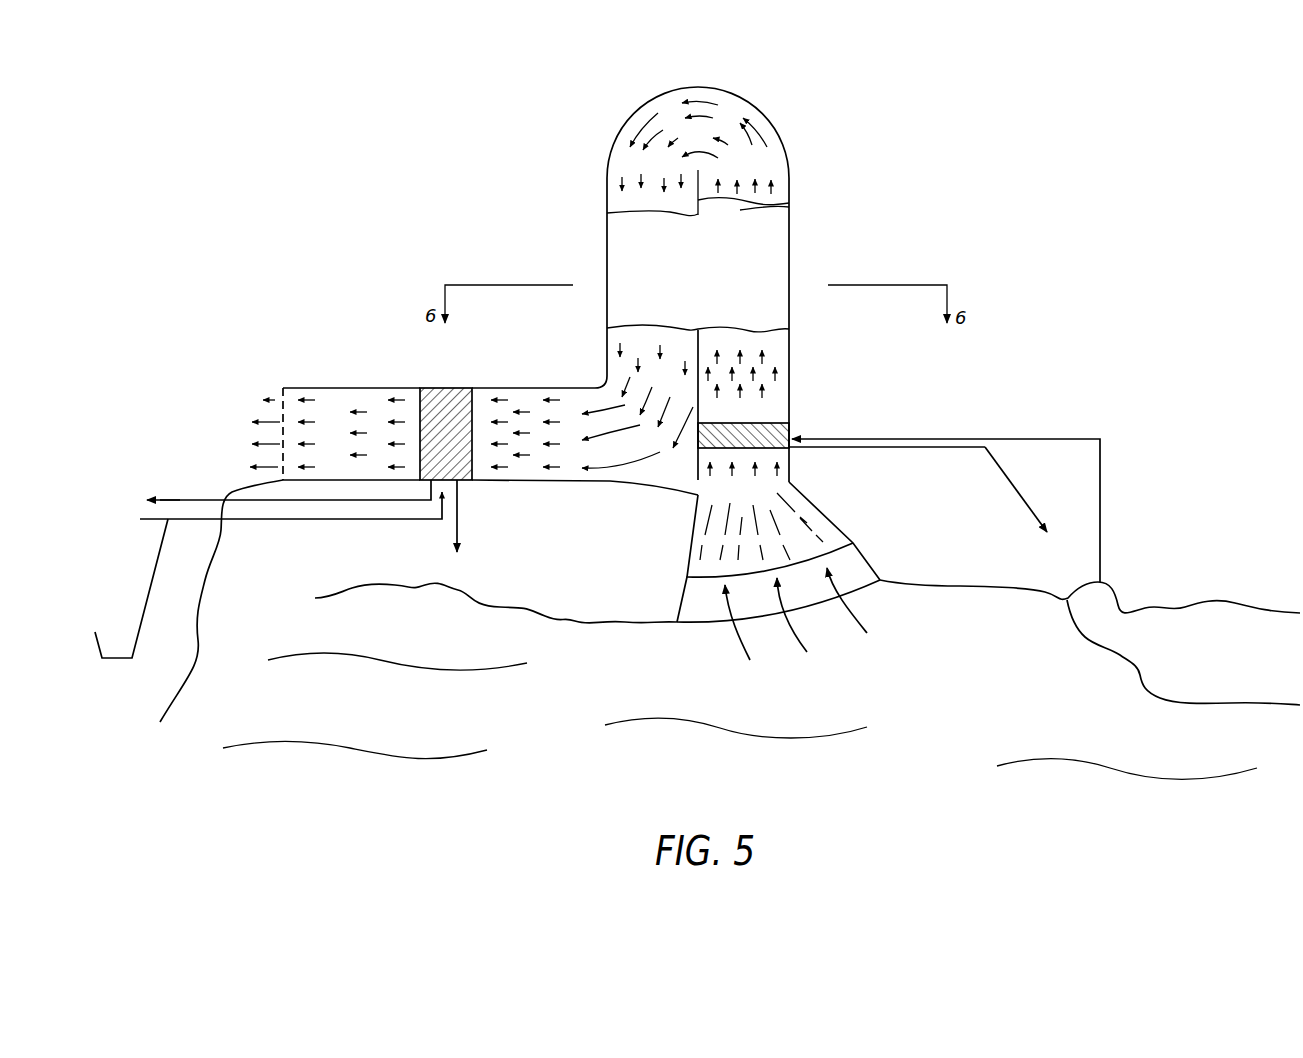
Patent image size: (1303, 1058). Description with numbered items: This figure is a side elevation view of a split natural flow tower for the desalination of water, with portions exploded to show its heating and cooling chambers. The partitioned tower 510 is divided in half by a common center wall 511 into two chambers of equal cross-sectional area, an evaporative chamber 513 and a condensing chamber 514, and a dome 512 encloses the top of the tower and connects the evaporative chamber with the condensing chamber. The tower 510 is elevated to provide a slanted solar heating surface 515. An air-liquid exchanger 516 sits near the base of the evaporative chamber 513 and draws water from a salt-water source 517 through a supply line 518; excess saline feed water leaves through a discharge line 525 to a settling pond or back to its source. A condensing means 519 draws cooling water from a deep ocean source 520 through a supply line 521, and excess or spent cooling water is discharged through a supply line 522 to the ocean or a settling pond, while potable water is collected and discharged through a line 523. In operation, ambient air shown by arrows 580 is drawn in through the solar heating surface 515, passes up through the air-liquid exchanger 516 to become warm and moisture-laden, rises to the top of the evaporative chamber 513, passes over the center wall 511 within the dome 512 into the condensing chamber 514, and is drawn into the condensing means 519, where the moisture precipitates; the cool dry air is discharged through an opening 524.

The partitioned tower 510 is at (791, 178).
The common center wall 511 is at (789, 204).
The dome 512 is at (715, 88).
The evaporative chamber 513 is at (778, 390).
The condensing chamber 514 is at (617, 378).
The solar heating surface 515 is at (802, 507).
The air-liquid exchanger 516 is at (788, 432).
The salt-water source 517 is at (1197, 637).
The supply line 518 is at (1012, 439).
The condensing means 519 is at (432, 388).
The deep ocean source 520 is at (122, 651).
The supply line 521 is at (290, 519).
The supply line 522 is at (192, 500).
The line 523 is at (460, 508).
The opening 524 is at (283, 405).
The discharge line 525 is at (1006, 482).
The arrows 580 is at (746, 650).